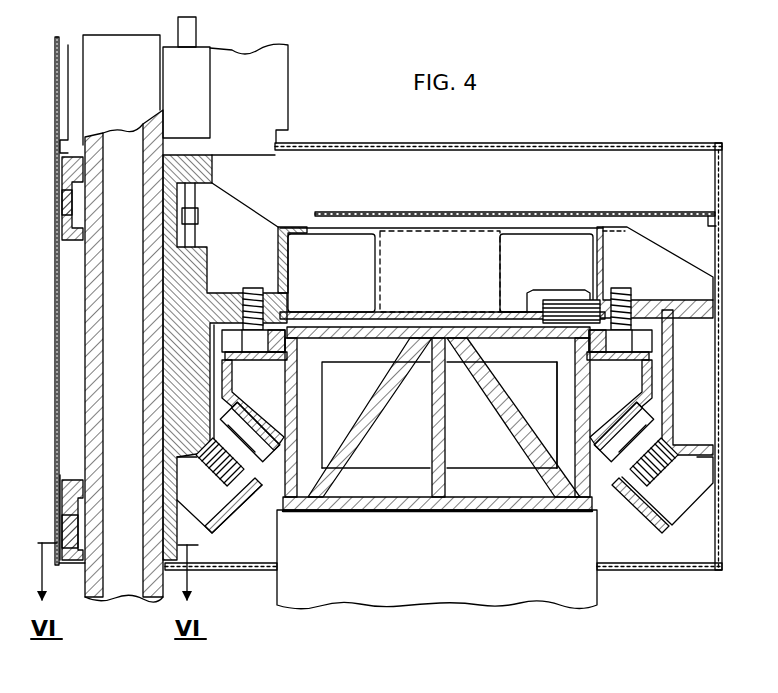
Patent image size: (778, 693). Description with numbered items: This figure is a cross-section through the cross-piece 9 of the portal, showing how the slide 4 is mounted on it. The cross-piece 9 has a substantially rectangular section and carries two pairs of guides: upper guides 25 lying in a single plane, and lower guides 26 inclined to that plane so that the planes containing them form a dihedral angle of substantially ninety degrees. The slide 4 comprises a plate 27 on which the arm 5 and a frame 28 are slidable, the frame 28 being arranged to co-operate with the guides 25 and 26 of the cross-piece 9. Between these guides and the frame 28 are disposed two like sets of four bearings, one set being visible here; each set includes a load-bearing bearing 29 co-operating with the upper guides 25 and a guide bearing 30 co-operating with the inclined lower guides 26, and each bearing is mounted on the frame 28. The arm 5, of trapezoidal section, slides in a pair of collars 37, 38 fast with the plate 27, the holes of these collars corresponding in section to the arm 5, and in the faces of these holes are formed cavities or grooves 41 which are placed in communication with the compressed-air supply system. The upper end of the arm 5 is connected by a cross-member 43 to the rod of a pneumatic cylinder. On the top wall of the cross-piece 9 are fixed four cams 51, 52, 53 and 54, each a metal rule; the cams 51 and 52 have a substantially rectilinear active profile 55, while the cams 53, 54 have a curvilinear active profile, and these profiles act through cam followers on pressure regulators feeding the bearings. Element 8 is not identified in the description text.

The slide 4 is at (267, 202).
The arm 5 is at (120, 413).
The base plate 8 is at (419, 580).
The cross-piece 9 is at (431, 423).
The upper guides 25 is at (255, 361).
The lower guides 26 is at (262, 423).
The plate 27 is at (180, 367).
The frame 28 is at (441, 252).
The bearing 29 is at (276, 330).
The guide bearing 30 is at (263, 470).
The collar 37 is at (68, 202).
The collar 38 is at (83, 548).
The cavities or grooves 41 is at (82, 190).
The cross-member 43 is at (119, 41).
The cam 51 is at (563, 365).
The cam 52 is at (552, 338).
The cam 53 is at (531, 310).
The cam 54 is at (548, 300).
The active profile 55 is at (606, 298).